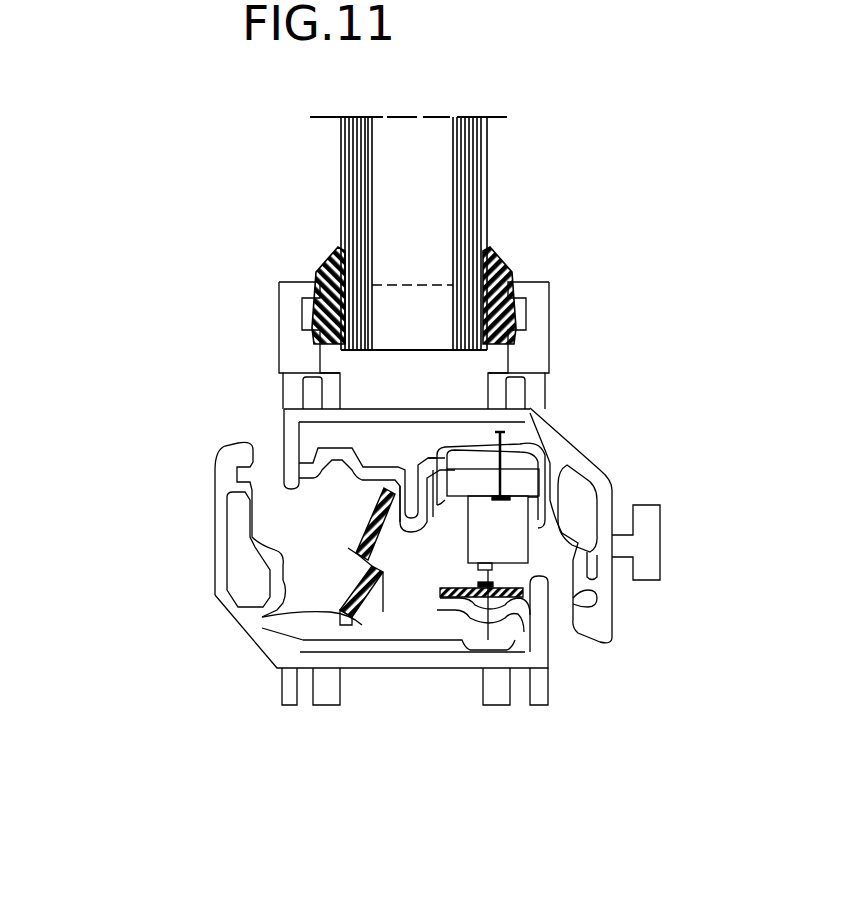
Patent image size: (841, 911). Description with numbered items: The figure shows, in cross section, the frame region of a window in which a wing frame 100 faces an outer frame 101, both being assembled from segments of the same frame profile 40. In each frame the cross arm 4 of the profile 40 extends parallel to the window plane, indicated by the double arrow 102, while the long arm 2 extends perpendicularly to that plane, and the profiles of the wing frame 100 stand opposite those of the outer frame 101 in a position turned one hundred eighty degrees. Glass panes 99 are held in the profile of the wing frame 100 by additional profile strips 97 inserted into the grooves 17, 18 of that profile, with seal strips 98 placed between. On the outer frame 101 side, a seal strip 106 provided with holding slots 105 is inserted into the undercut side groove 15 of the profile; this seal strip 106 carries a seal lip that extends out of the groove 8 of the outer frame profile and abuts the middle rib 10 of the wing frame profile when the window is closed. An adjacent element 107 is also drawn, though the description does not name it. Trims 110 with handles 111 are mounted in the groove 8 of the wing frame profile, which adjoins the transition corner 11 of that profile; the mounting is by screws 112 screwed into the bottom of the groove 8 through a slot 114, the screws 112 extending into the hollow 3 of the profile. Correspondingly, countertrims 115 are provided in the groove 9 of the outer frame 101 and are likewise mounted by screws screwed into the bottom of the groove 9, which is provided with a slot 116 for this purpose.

The long arm 2 is at (285, 432).
The hollow 3 is at (305, 437).
The cross arm 4 is at (215, 477).
The groove 8 is at (255, 617).
The groove 9 is at (461, 598).
The middle rib 10 is at (419, 512).
The transition corner 11 is at (297, 607).
The undercut side groove 15 is at (387, 605).
The groove 17 is at (503, 430).
The groove 18 is at (313, 410).
The profile 40 is at (252, 657).
The profile strips 97 is at (290, 340).
The seal strips 98 is at (315, 270).
The glass panes 99 is at (360, 163).
The wing frame 100 is at (192, 328).
The outer frame 101 is at (163, 529).
The double arrow 102 is at (217, 157).
The holding slots 105 is at (360, 610).
The seal strip 106 is at (370, 547).
The sealing strip 107 is at (390, 505).
The trims 110 is at (468, 559).
The handles 111 is at (647, 527).
The screws 112 is at (527, 443).
The slot 114 is at (513, 457).
The countertrims 115 is at (435, 652).
The slot 116 is at (497, 615).